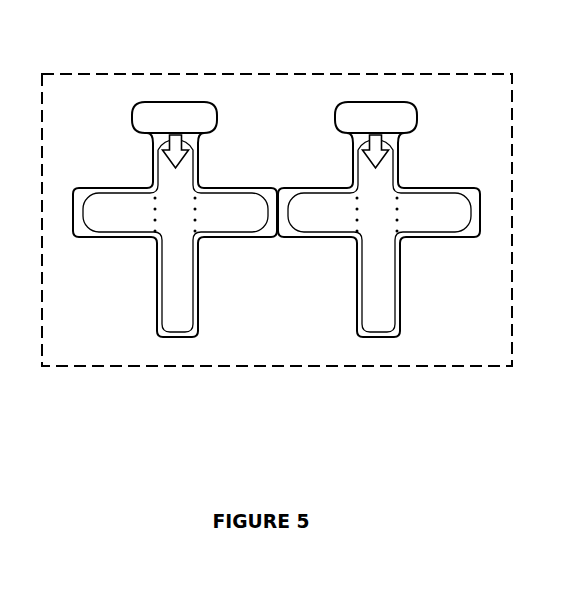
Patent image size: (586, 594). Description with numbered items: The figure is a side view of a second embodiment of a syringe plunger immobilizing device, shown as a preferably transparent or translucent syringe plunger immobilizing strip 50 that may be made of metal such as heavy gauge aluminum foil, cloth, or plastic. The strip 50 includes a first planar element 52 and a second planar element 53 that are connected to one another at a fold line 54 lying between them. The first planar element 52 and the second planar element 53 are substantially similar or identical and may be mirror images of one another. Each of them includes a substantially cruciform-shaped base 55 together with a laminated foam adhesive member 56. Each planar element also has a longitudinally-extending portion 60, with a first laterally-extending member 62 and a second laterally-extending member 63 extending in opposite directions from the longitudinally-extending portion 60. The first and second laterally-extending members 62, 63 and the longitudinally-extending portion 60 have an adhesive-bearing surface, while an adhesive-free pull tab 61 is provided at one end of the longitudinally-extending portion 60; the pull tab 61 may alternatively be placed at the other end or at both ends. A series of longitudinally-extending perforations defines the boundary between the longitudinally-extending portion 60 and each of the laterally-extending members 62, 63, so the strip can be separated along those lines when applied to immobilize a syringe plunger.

The syringe plunger immobilizing strip 50 is at (322, 38).
The first planar element 52 is at (163, 229).
The second planar element 53 is at (376, 256).
The fold line 54 is at (277, 215).
The cruciform-shaped base 55 is at (83, 233).
The laminated foam adhesive member 56 is at (125, 222).
The longitudinally-extending portion 60 is at (372, 239).
The adhesive-free pull tab 61 is at (147, 113).
The first laterally-extending member 62 is at (315, 208).
The second laterally-extending member 63 is at (428, 205).